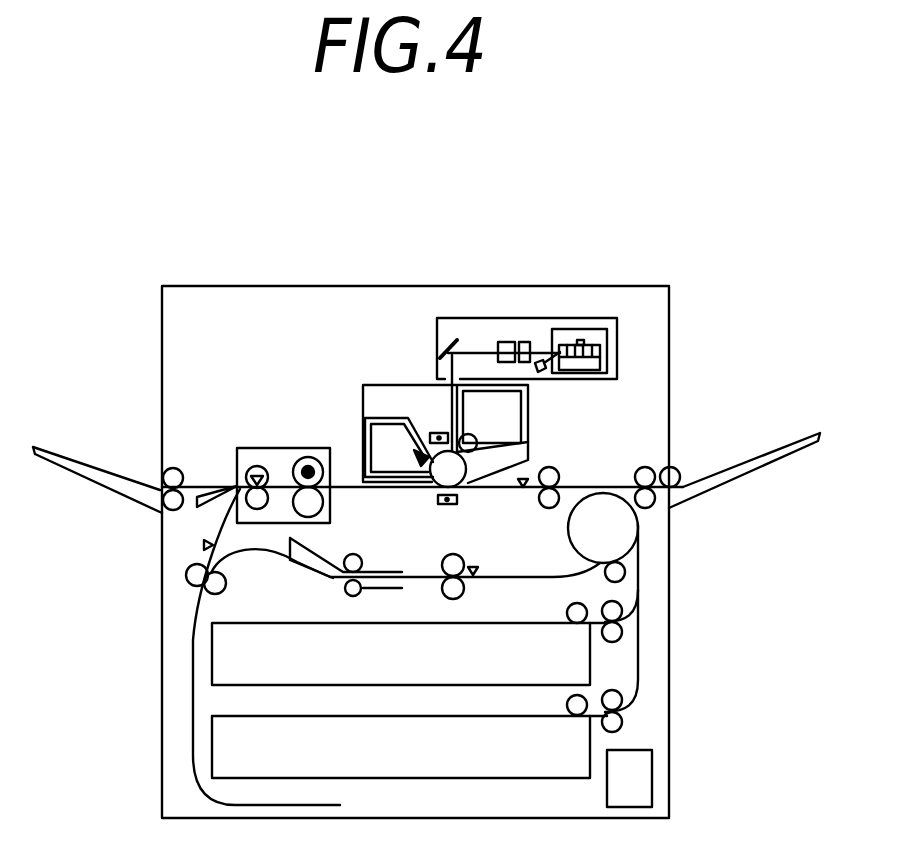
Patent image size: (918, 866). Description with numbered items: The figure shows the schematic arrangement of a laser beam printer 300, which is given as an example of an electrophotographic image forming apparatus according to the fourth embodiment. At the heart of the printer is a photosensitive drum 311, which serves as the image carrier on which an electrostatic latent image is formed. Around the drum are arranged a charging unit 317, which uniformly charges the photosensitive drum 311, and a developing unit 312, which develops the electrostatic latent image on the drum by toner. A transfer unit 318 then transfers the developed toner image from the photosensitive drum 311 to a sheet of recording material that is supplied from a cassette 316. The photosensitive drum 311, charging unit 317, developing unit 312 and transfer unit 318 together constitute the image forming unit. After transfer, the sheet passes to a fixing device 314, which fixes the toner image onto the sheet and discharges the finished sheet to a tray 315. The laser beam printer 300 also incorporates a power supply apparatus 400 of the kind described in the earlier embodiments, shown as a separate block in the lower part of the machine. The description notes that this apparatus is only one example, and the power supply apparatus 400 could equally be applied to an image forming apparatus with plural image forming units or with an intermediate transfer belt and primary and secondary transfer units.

The laser beam printer 300 is at (572, 286).
The photosensitive drum 311 is at (457, 473).
The developing unit 312 is at (477, 440).
The fixing device 314 is at (285, 448).
The tray 315 is at (84, 468).
The cassette 316 is at (573, 762).
The charging unit 317 is at (441, 433).
The transfer unit 318 is at (458, 500).
The power supply apparatus 400 is at (605, 778).